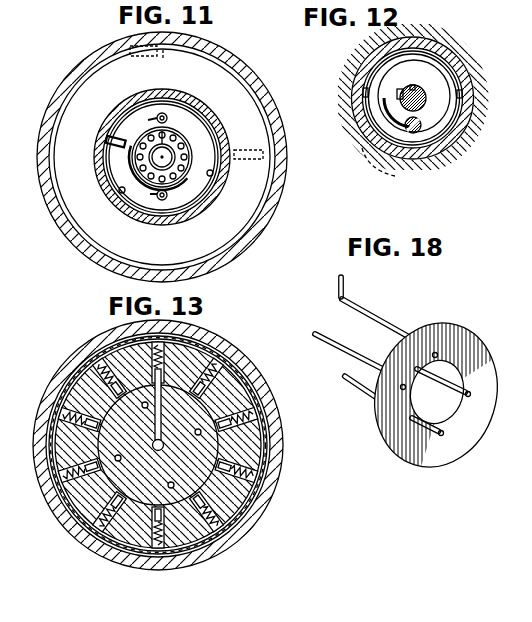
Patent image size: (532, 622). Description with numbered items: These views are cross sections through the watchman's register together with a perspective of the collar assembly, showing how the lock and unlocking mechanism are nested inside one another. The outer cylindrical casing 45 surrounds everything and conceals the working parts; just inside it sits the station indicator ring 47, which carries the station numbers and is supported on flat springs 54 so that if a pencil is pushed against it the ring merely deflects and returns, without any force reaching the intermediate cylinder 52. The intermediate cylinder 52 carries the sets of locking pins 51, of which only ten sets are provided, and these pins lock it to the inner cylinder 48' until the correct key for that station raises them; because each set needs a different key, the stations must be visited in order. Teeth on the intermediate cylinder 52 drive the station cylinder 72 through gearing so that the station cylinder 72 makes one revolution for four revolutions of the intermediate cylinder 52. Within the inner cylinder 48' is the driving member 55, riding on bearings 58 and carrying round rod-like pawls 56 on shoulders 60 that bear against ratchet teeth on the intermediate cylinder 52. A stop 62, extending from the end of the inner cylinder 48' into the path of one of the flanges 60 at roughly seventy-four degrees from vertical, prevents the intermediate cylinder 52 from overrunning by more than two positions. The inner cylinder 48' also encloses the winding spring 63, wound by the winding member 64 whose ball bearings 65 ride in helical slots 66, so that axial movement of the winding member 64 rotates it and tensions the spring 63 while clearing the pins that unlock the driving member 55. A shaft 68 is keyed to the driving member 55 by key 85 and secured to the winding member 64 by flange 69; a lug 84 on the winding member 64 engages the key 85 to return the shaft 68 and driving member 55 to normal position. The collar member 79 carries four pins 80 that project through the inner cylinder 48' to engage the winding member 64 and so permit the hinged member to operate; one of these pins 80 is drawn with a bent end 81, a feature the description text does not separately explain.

In FIG. 11, the outer cylindrical casing 45 is at (220, 50).
In FIG. 13, the outer cylindrical casing 45 is at (233, 352).
In FIG. 11, the station indicator ring 47 is at (88, 95).
In FIG. 11, the inner cylinder 48' is at (210, 157).
In FIG. 12, the inner cylinder 48' is at (422, 92).
In FIG. 13, the inner cylinder 48' is at (158, 445).
In FIG. 13, the locking pins 51 is at (164, 385).
In FIG. 11, the intermediate cylinder 52 is at (217, 118).
In FIG. 12, the intermediate cylinder 52 is at (356, 63).
In FIG. 13, the intermediate cylinder 52 is at (250, 452).
In FIG. 11, the flat springs 54 is at (122, 46).
In FIG. 11, the driving member 55 is at (127, 172).
In FIG. 11, the pawls 56 is at (167, 119).
In FIG. 11, the bearings 58 is at (168, 195).
In FIG. 11, the shoulders 60 is at (152, 122).
In FIG. 11, the stop 62 is at (110, 147).
In FIG. 12, the winding spring 63 is at (386, 110).
In FIG. 12, the winding member 64 is at (453, 113).
In FIG. 12, the ball bearings 65 is at (450, 160).
In FIG. 12, the helical slots 66 is at (378, 166).
In FIG. 12, the shaft 68 is at (419, 93).
In FIG. 12, the flange 69 is at (420, 121).
In FIG. 13, the station cylinder 72 is at (253, 392).
In FIG. 18, the collar member 79 is at (482, 347).
In FIG. 13, the pins 80 is at (144, 409).
In FIG. 18, the pins 80 is at (352, 376).
In FIG. 18, the bent end 81 is at (346, 286).
In FIG. 12, the lug 84 is at (397, 92).
In FIG. 12, the key 85 is at (412, 86).